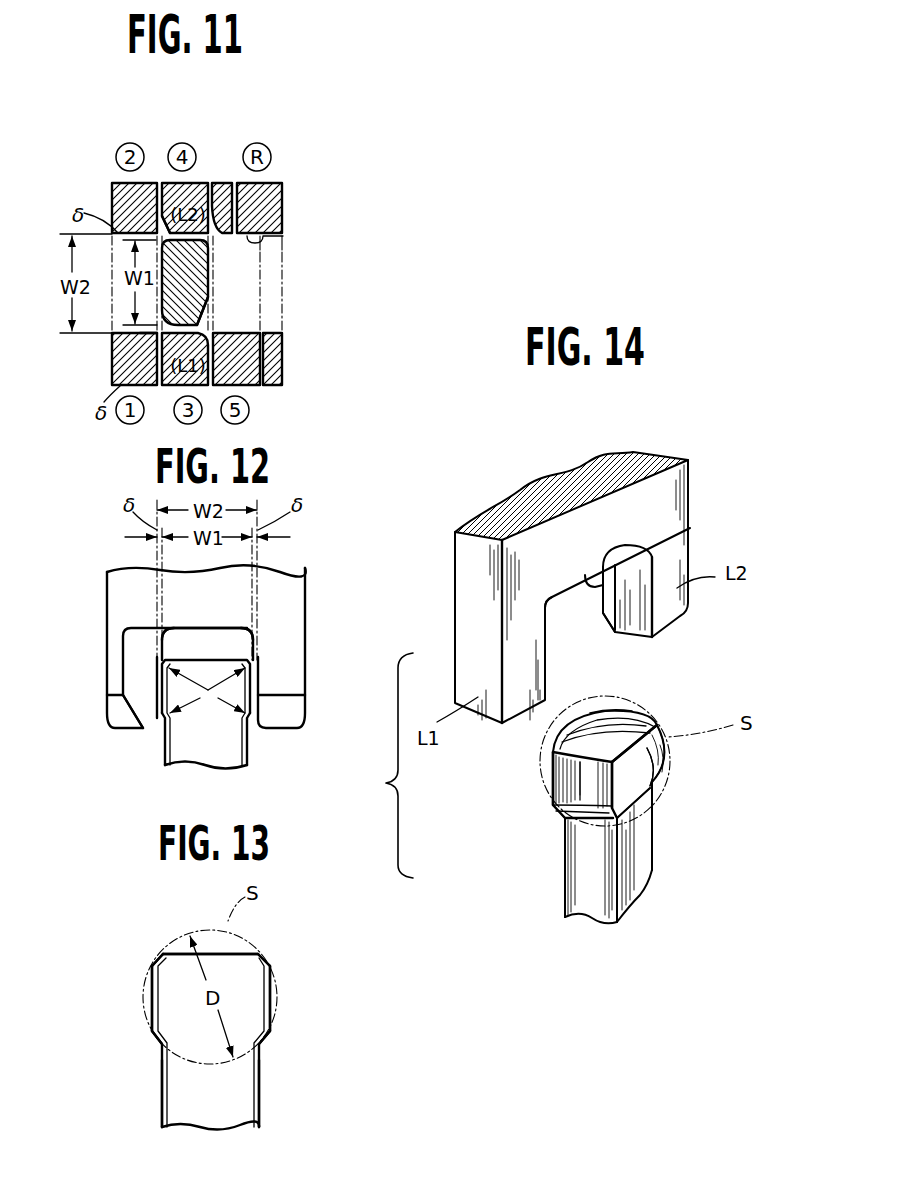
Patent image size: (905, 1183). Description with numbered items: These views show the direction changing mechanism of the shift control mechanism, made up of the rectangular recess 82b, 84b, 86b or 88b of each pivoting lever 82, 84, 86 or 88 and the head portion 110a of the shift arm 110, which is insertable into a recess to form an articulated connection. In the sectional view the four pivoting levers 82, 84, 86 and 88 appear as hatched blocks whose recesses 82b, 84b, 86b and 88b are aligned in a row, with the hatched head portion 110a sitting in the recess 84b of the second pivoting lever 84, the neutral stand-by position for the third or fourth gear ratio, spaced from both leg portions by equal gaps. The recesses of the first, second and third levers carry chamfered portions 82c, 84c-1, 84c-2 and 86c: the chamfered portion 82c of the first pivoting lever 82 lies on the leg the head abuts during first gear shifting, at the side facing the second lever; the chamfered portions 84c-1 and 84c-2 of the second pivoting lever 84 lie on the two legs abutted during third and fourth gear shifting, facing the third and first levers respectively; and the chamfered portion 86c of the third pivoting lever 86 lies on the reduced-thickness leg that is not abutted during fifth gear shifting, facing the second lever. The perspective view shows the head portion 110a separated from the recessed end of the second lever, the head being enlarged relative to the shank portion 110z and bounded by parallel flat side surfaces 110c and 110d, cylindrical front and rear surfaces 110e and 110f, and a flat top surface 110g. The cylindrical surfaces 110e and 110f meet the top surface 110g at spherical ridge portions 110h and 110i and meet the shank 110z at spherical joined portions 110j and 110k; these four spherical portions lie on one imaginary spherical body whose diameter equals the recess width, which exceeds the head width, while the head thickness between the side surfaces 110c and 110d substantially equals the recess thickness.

In FIG. 11, the first pivoting lever 82 is at (122, 197).
In FIG. 11, the rectangular recess of the first pivoting lever 82b is at (112, 340).
In FIG. 11, the chamfered portion of the first pivoting lever 82c is at (155, 333).
In FIG. 11, the second pivoting lever 84 is at (196, 200).
In FIG. 12, the second pivoting lever 84 is at (287, 600).
In FIG. 14, the second pivoting lever 84 is at (555, 523).
In FIG. 11, the rectangular recess of the second pivoting lever 84b is at (190, 325).
In FIG. 12, the rectangular recess of the second pivoting lever 84b is at (210, 640).
In FIG. 14, the rectangular recess of the second pivoting lever 84b is at (690, 528).
In FIG. 11, the chamfered portion of the second pivoting lever 84c-1 is at (212, 336).
In FIG. 12, the chamfered portion of the second pivoting lever 84c-1 is at (141, 703).
In FIG. 14, the chamfered portion of the second pivoting lever 84c-1 is at (545, 653).
In FIG. 11, the chamfered portion of the second pivoting lever 84c-2 is at (160, 214).
In FIG. 14, the chamfered portion of the second pivoting lever 84c-2 is at (610, 603).
In FIG. 11, the third pivoting lever 86 is at (256, 383).
In FIG. 11, the rectangular recess of the third pivoting lever 86b is at (240, 327).
In FIG. 11, the chamfered portion of the third pivoting lever 86c is at (250, 236).
In FIG. 11, the fourth pivoting lever 88 is at (268, 201).
In FIG. 11, the rectangular recess of the fourth pivoting lever 88b is at (283, 234).
In FIG. 14, the shift arm 110 is at (657, 853).
In FIG. 11, the head portion of the shift arm 110a is at (198, 273).
In FIG. 12, the head portion of the shift arm 110a is at (238, 686).
In FIG. 13, the head portion of the shift arm 110a is at (288, 1011).
In FIG. 14, the head portion of the shift arm 110a is at (669, 775).
In FIG. 14, the flat side surface 110c is at (670, 765).
In FIG. 14, the flat side surface 110d is at (547, 783).
In FIG. 13, the cylindrical front surface 110e is at (155, 1005).
In FIG. 14, the cylindrical front surface 110e is at (577, 790).
In FIG. 13, the cylindrical rear surface 110f is at (268, 993).
In FIG. 14, the cylindrical rear surface 110f is at (652, 755).
In FIG. 13, the flat top surface 110g is at (222, 953).
In FIG. 14, the flat top surface 110g is at (633, 723).
In FIG. 13, the spherical ridge portion 110h is at (155, 962).
In FIG. 14, the spherical ridge portion 110h is at (562, 765).
In FIG. 13, the spherical ridge portion 110i is at (268, 962).
In FIG. 14, the spherical ridge portion 110i is at (617, 712).
In FIG. 13, the spherical joined portion 110j is at (158, 1042).
In FIG. 14, the spherical joined portion 110j is at (585, 812).
In FIG. 13, the spherical joined portion 110k is at (268, 1040).
In FIG. 14, the spherical joined portion 110k is at (663, 787).
In FIG. 13, the shank portion of the shift arm 110z is at (225, 1093).
In FIG. 14, the shank portion of the shift arm 110z is at (628, 866).